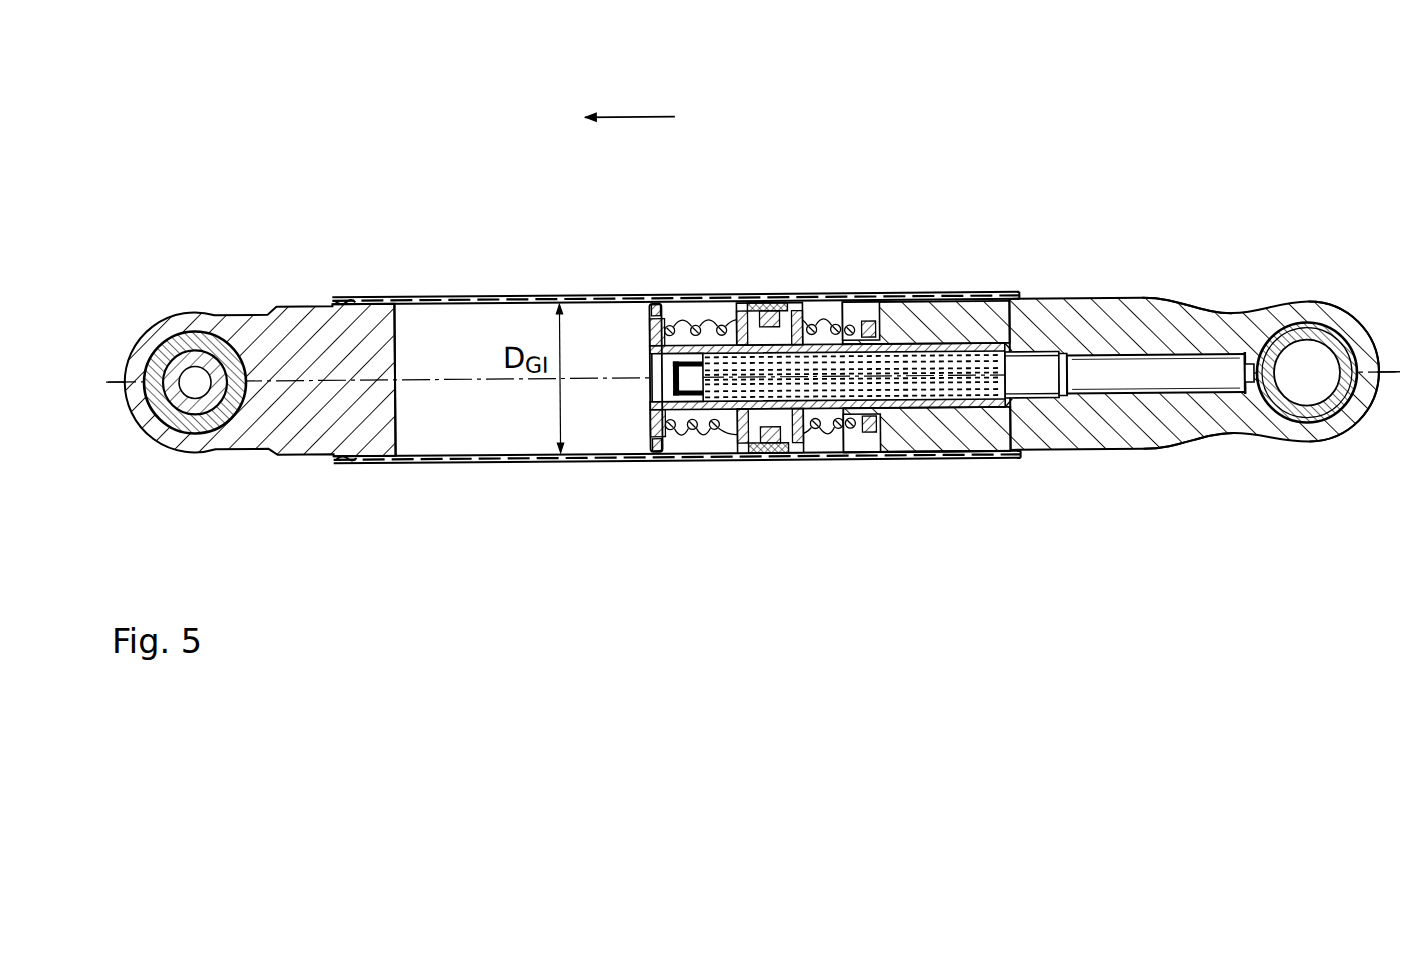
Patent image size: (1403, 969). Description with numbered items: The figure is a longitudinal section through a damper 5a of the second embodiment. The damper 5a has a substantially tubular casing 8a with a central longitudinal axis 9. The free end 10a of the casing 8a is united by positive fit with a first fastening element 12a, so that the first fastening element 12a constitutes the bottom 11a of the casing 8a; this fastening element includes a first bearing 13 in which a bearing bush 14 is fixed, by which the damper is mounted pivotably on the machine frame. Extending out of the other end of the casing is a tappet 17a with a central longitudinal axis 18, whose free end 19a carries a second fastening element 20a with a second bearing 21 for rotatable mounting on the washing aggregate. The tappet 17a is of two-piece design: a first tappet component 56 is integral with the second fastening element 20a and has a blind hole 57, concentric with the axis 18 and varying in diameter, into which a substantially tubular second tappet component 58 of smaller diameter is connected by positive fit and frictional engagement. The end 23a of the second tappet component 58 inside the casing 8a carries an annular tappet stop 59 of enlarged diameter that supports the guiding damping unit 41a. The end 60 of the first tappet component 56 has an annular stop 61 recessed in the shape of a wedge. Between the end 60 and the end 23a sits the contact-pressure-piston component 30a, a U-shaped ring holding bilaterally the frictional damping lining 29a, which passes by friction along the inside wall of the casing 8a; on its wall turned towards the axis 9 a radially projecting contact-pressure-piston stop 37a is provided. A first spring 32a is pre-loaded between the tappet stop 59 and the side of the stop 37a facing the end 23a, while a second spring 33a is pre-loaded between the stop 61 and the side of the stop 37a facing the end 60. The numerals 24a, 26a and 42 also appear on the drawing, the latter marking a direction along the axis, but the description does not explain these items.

The damper 5a is at (517, 234).
The tubular casing 8a is at (457, 293).
The central longitudinal axis 9 is at (113, 377).
The free end of the casing 10a is at (363, 458).
The bottom of the casing 11a is at (397, 409).
The first fastening element 12a is at (262, 293).
The first bearing 13 is at (195, 430).
The bearing bush 14 is at (195, 353).
The tappet 17a is at (1100, 296).
The central longitudinal axis of the tappet 18 is at (1392, 376).
The free end of the tappet 19a is at (1172, 314).
The second fastening element 20a is at (1330, 300).
The second bearing 21 is at (1307, 417).
The end of the second tappet component inside the casing 23a is at (652, 300).
The hollow piston rod 24a is at (1020, 458).
The spring support block 26a is at (713, 306).
The frictional damping lining 29a is at (778, 302).
The contact-pressure-piston component 30a is at (743, 458).
The first spring 32a is at (690, 431).
The second spring 33a is at (844, 458).
The contact-pressure-piston stop 37a is at (787, 456).
The guiding damping unit 41a is at (653, 453).
The direction of movement 42 is at (630, 112).
The first tappet component 56 is at (1198, 430).
The blind hole 57 is at (1118, 392).
The second tappet component 58 is at (1003, 458).
The tappet stop 59 is at (673, 323).
The end of the first tappet component 60 is at (857, 306).
The annular stop 61 is at (866, 458).